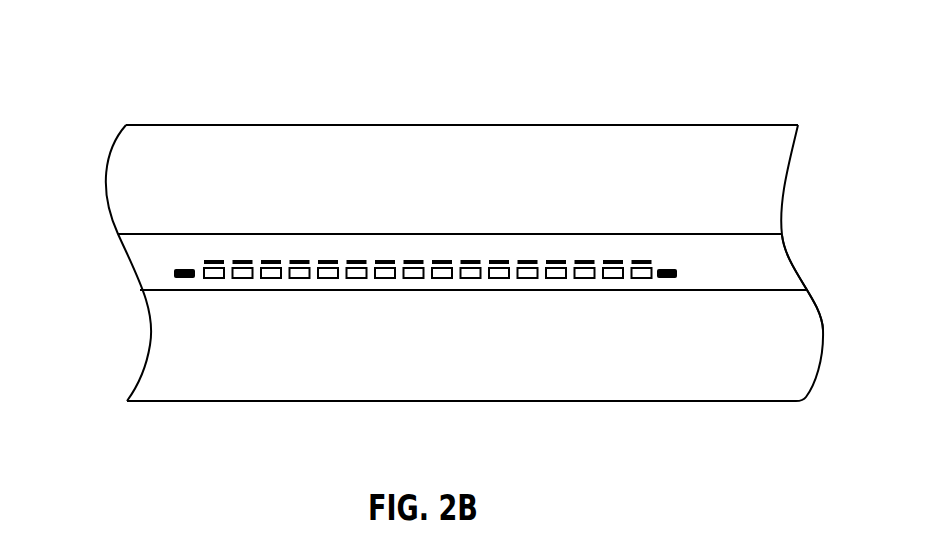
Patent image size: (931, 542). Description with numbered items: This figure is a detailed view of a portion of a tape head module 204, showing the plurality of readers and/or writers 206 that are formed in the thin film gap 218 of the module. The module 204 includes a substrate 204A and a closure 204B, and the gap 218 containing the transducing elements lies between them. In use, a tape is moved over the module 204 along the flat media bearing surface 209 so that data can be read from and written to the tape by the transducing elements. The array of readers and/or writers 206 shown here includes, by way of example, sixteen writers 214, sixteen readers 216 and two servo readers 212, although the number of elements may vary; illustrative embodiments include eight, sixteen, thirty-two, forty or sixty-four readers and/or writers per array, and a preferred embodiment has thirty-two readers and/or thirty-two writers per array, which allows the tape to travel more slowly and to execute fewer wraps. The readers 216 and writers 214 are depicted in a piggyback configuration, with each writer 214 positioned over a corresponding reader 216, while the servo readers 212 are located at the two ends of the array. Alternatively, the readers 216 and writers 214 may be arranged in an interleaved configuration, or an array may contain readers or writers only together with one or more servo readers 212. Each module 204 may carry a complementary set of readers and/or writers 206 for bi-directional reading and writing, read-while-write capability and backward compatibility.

The module 204 is at (141, 96).
The substrate 204A is at (243, 125).
The closure 204B is at (297, 401).
The media bearing surface 209 is at (383, 197).
The writers 214 is at (553, 259).
The readers 216 is at (555, 279).
The servo readers 212 is at (174, 273).
The readers and/or writers 206 is at (706, 259).
The gap 218 is at (795, 258).